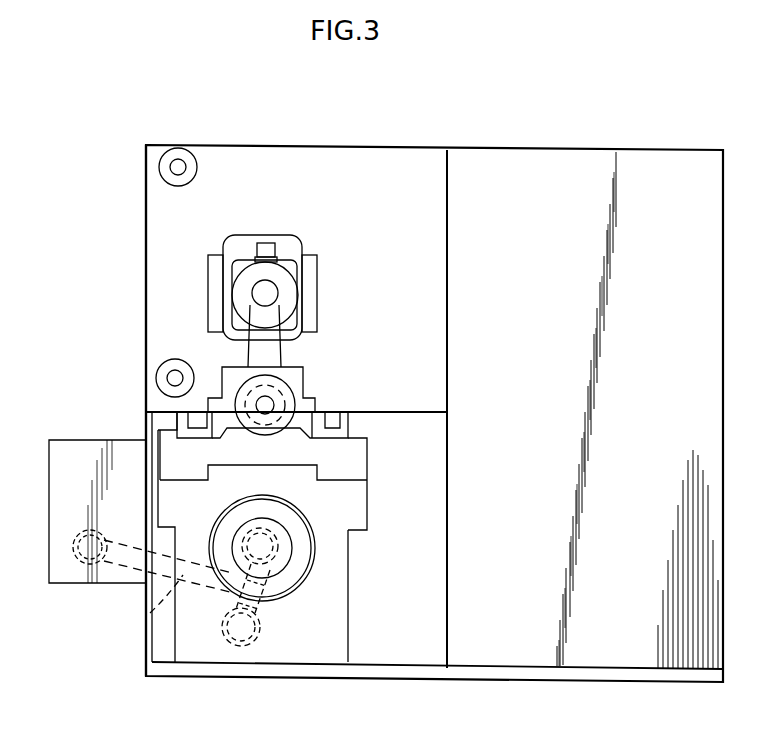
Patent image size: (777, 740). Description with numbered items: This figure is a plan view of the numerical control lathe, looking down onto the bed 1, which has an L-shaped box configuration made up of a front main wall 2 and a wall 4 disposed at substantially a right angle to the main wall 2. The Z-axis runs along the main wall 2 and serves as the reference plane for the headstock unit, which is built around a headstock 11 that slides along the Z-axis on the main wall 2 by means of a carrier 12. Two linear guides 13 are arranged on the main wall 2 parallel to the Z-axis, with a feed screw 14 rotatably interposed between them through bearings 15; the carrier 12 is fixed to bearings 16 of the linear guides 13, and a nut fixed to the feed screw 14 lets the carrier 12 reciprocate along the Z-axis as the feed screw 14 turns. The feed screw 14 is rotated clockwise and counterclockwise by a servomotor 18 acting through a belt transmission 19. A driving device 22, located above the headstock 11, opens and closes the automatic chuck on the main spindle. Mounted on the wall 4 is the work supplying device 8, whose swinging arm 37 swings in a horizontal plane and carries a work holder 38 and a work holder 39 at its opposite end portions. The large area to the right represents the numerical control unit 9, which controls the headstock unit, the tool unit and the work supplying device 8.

The bed 1 is at (247, 157).
The front main wall 2 is at (432, 430).
The wall 4 is at (146, 310).
The work supplying device 8 is at (50, 486).
The numerical control unit 9 is at (583, 150).
The headstock 11 is at (337, 557).
The carrier 12 is at (358, 468).
The linear guides 13 is at (188, 412).
The feed screw 14 is at (252, 395).
The bearings 15 is at (298, 377).
The bearings 16 is at (183, 432).
The servomotor 18 is at (283, 262).
The belt transmission 19 is at (290, 350).
The driving device 22 is at (285, 578).
The swinging arm 37 is at (150, 613).
The work holder 38 is at (290, 524).
The work holder 39 is at (258, 642).